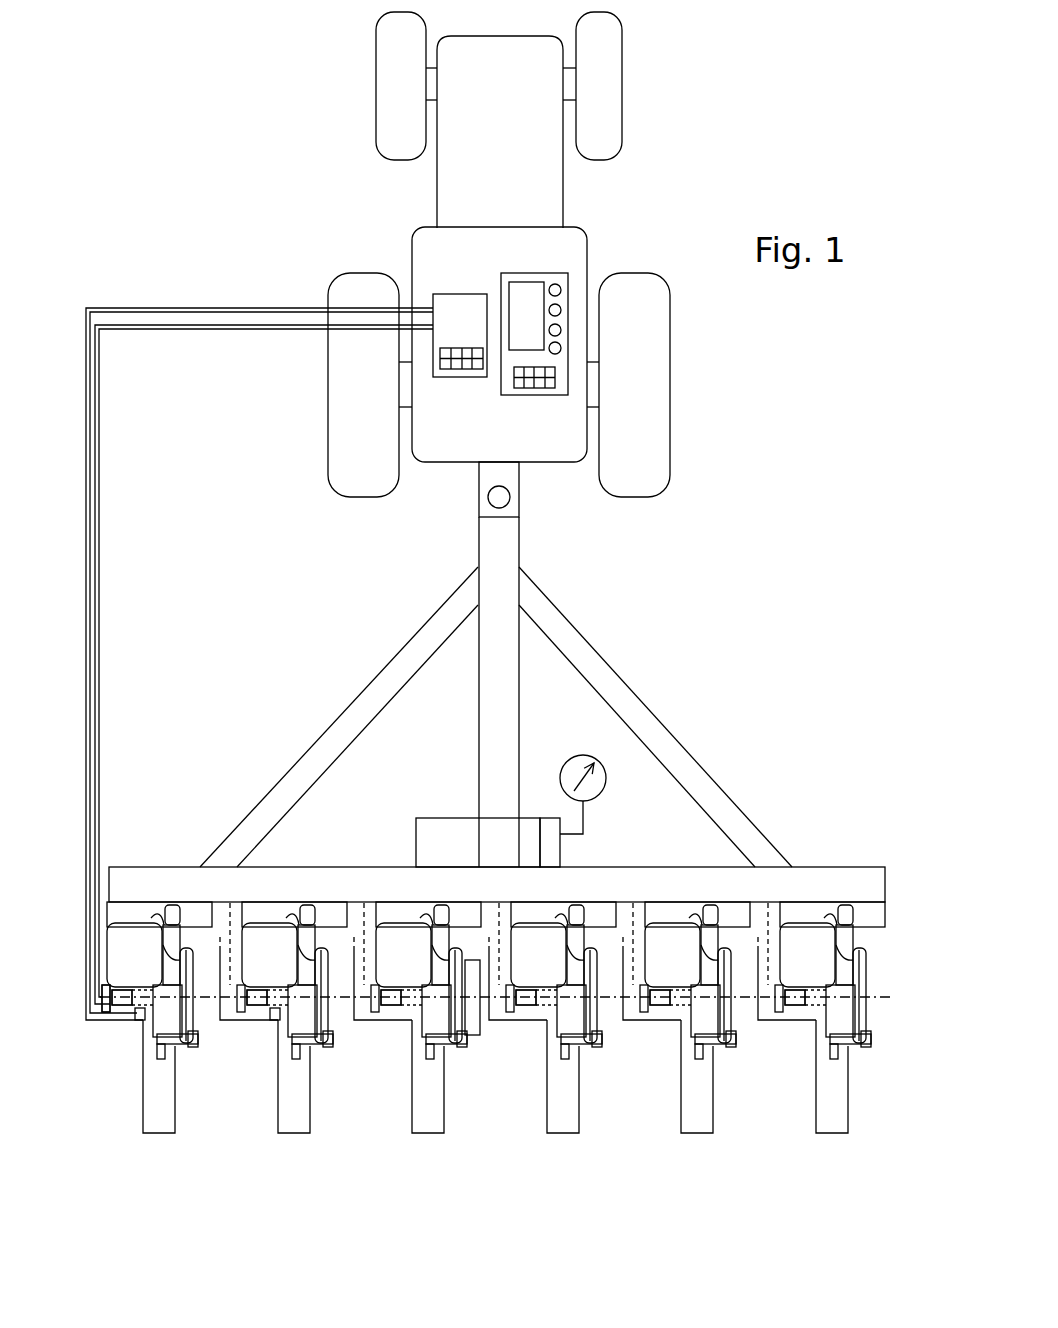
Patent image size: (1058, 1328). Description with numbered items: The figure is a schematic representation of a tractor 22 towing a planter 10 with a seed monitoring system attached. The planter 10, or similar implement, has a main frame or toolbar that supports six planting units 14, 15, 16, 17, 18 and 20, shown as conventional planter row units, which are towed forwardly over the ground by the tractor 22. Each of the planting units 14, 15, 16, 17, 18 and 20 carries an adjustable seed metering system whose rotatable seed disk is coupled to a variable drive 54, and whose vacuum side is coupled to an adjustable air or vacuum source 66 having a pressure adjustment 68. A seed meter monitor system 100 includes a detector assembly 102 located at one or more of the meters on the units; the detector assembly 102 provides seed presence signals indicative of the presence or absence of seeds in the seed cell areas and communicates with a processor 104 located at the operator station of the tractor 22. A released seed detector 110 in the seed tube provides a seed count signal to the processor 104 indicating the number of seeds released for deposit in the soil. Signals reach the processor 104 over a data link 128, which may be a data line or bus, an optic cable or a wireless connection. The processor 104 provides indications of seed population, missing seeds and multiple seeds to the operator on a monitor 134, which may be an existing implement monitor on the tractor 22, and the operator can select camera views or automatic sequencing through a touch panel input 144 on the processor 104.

The planter 10 is at (753, 755).
The planting unit 14 is at (187, 1124).
The planting unit 15 is at (322, 1124).
The planting unit 16 is at (456, 1124).
The planting unit 17 is at (591, 1124).
The planting unit 18 is at (725, 1124).
The planting unit 20 is at (860, 1124).
The tractor 22 is at (695, 137).
The variable drive 54 is at (478, 1036).
The adjustable air or vacuum source 66 is at (451, 812).
The pressure adjustment 68 is at (540, 805).
The seed meter monitor system 100 is at (100, 1040).
The detector assembly 102 is at (125, 1018).
The processor 104 is at (457, 294).
The seed detector 110 is at (133, 1033).
The data link 128 is at (118, 735).
The monitor 134 is at (537, 273).
The touch panel input 144 is at (458, 369).